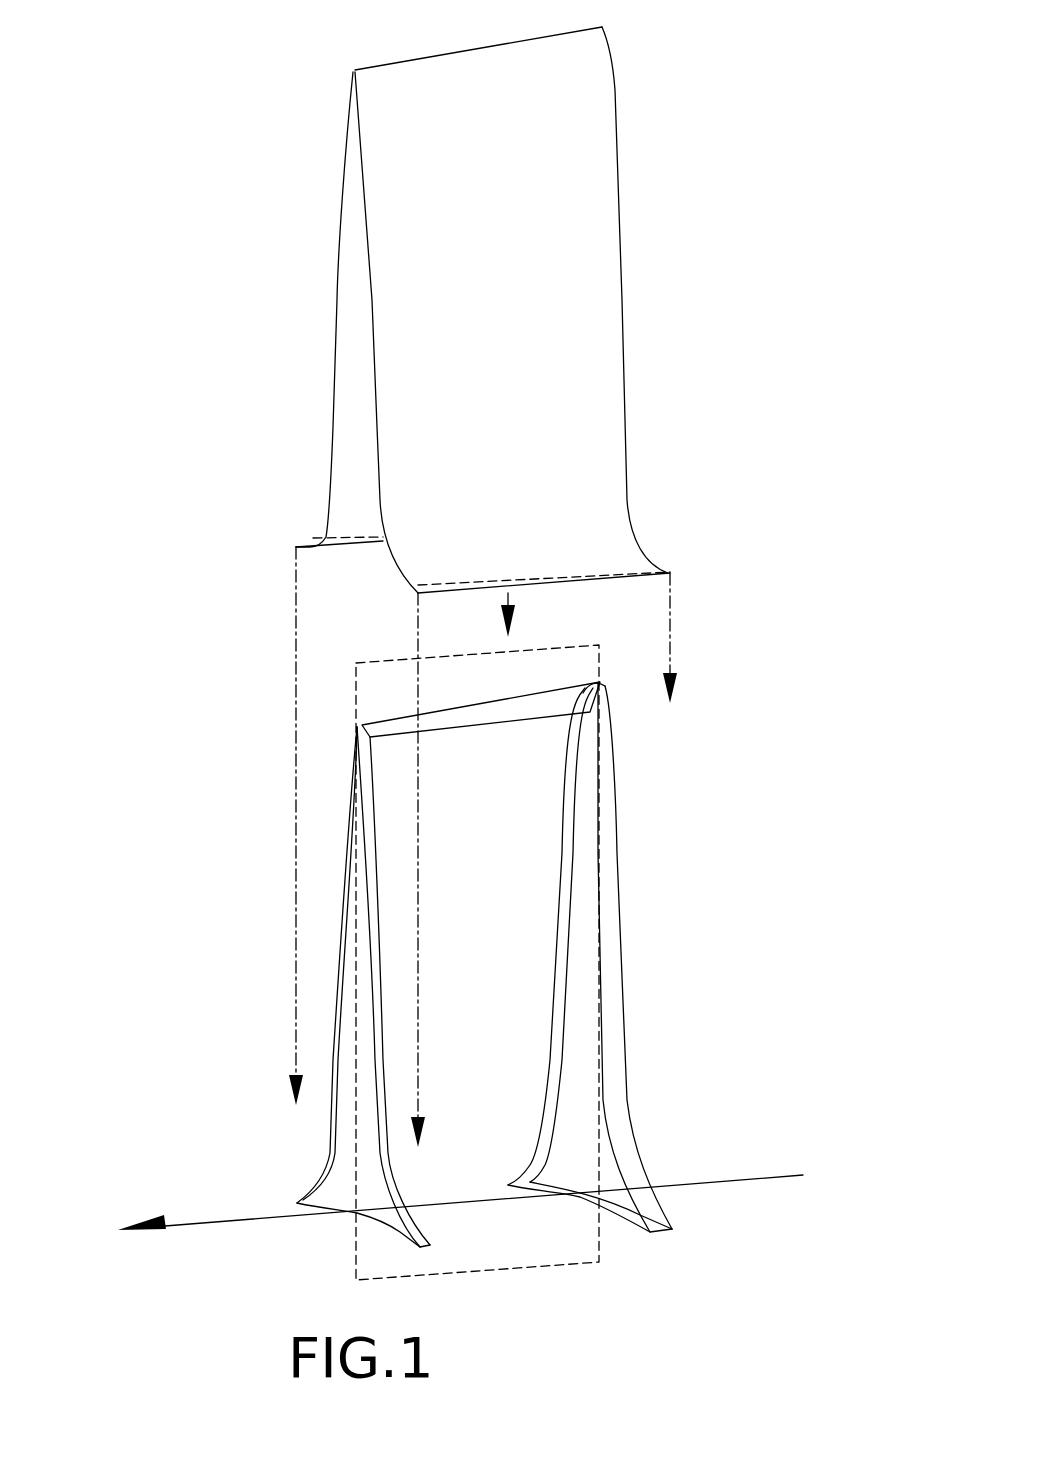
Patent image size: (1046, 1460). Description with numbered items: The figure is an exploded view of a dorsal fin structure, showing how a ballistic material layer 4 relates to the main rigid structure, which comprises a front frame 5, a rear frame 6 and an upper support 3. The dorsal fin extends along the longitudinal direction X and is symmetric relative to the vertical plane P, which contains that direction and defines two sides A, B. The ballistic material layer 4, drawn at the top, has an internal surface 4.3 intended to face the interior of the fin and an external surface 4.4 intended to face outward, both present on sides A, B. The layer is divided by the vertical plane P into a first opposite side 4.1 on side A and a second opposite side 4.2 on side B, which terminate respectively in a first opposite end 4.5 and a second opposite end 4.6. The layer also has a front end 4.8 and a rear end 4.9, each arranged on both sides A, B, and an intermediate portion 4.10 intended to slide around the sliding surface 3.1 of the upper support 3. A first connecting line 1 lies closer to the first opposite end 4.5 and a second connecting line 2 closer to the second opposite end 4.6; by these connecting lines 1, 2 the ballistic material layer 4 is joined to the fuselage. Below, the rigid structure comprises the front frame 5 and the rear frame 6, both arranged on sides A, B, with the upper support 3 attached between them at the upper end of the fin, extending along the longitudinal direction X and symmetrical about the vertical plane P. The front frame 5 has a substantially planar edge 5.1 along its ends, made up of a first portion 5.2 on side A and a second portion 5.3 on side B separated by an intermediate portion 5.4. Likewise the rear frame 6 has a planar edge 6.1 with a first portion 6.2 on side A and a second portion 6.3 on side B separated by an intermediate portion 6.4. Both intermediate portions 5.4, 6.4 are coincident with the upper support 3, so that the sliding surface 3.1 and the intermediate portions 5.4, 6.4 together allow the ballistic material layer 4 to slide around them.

The first connecting line 1 is at (473, 572).
The second connecting line 2 is at (548, 540).
The upper support 3 is at (400, 660).
The sliding surface 3.1 is at (552, 703).
The ballistic material layer 4 is at (480, 297).
The first opposite side 4.1 is at (255, 263).
The second opposite side 4.2 is at (703, 414).
The internal surface 4.3 is at (350, 345).
The external surface 4.4 is at (607, 118).
The first opposite end 4.5 is at (290, 580).
The second opposite end 4.6 is at (640, 610).
The front end 4.8 is at (347, 460).
The rear end 4.9 is at (667, 265).
The intermediate portion 4.10 is at (455, 30).
The front frame 5 is at (348, 957).
The planar edge 5.1 is at (377, 790).
The first portion 5.2 is at (330, 1162).
The second portion 5.3 is at (393, 1162).
The intermediate portion 5.4 is at (330, 700).
The rear frame 6 is at (591, 954).
The planar edge 6.1 is at (612, 813).
The first portion 6.2 is at (512, 1035).
The second portion 6.3 is at (627, 1113).
The intermediate portion 6.4 is at (593, 690).
The vertical plane P is at (549, 618).
The side A is at (175, 1000).
The side B is at (603, 1337).
The longitudinal direction X-X' X is at (475, 1219).